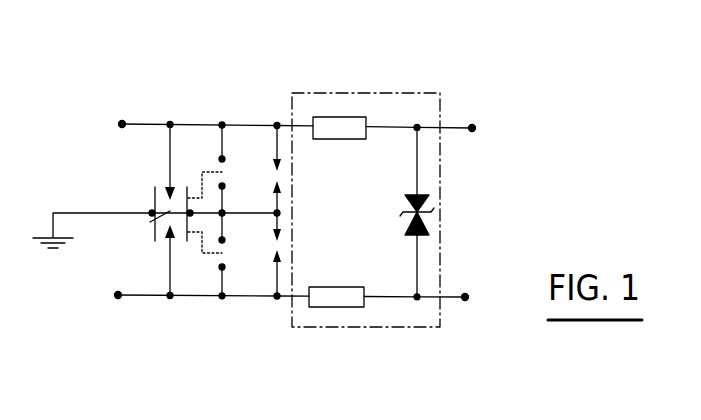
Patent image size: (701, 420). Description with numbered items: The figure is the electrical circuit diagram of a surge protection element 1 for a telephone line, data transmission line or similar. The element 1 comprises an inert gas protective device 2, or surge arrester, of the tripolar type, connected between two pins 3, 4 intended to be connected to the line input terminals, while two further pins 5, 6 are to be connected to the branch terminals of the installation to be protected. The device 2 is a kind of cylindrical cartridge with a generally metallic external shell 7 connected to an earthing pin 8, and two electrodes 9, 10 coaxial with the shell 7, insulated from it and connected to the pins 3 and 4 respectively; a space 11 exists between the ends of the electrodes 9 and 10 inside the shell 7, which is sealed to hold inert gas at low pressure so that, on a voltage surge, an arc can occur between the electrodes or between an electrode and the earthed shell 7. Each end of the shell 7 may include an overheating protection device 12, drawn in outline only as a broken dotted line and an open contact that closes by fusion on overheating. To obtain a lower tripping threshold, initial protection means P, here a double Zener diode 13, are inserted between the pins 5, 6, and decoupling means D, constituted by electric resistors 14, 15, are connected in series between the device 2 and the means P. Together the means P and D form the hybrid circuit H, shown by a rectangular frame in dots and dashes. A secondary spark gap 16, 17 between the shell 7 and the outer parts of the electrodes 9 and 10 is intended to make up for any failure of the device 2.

The surge protection element 1 is at (213, 90).
The inert gas protective device 2 is at (122, 216).
The pin 3 is at (122, 123).
The pin 4 is at (118, 297).
The pin 5 is at (476, 127).
The pin 6 is at (466, 298).
The external shell 7 is at (155, 238).
The earthing pin 8 is at (108, 212).
The electrode 9 is at (172, 150).
The electrode 10 is at (167, 273).
The space 11 is at (150, 222).
The overheating protection device 12 is at (223, 184).
The double Zener diode 13 is at (424, 197).
The electric resistor 14 is at (352, 126).
The electric resistor 15 is at (333, 305).
The secondary spark gap 16 is at (282, 168).
The secondary spark gap 17 is at (270, 252).
The hybrid circuit H is at (420, 93).
The decoupling means D is at (329, 150).
The initial protection means P is at (448, 206).